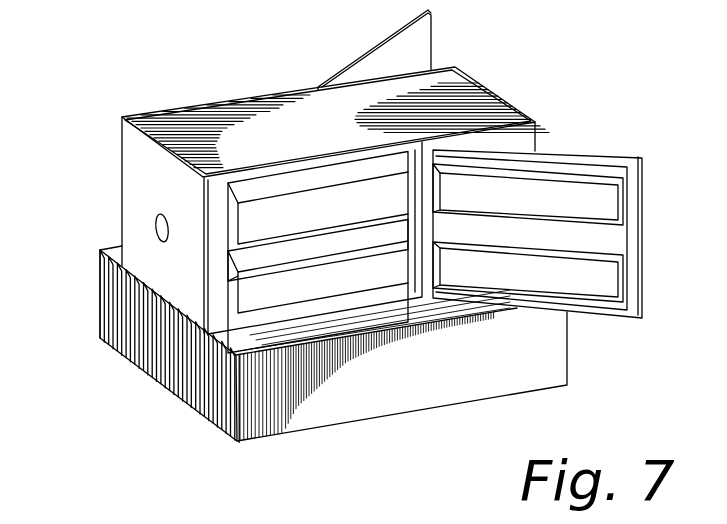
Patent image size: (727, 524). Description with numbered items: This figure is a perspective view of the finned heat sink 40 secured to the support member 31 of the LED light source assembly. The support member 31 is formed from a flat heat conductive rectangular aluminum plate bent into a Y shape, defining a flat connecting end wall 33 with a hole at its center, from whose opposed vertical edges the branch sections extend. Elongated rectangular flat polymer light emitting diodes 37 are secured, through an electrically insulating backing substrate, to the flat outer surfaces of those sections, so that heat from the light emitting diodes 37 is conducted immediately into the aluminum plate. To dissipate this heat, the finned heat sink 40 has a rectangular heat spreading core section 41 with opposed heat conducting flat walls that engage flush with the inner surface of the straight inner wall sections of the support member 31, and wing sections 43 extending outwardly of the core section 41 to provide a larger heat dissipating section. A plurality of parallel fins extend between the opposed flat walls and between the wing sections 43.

The support member 31 is at (167, 272).
The connecting end wall 33 is at (153, 178).
The light emitting diodes 37 is at (597, 279).
The finned heat sink 40 is at (447, 103).
The heat spreading core section 41 is at (263, 122).
The wing sections 43 is at (98, 283).